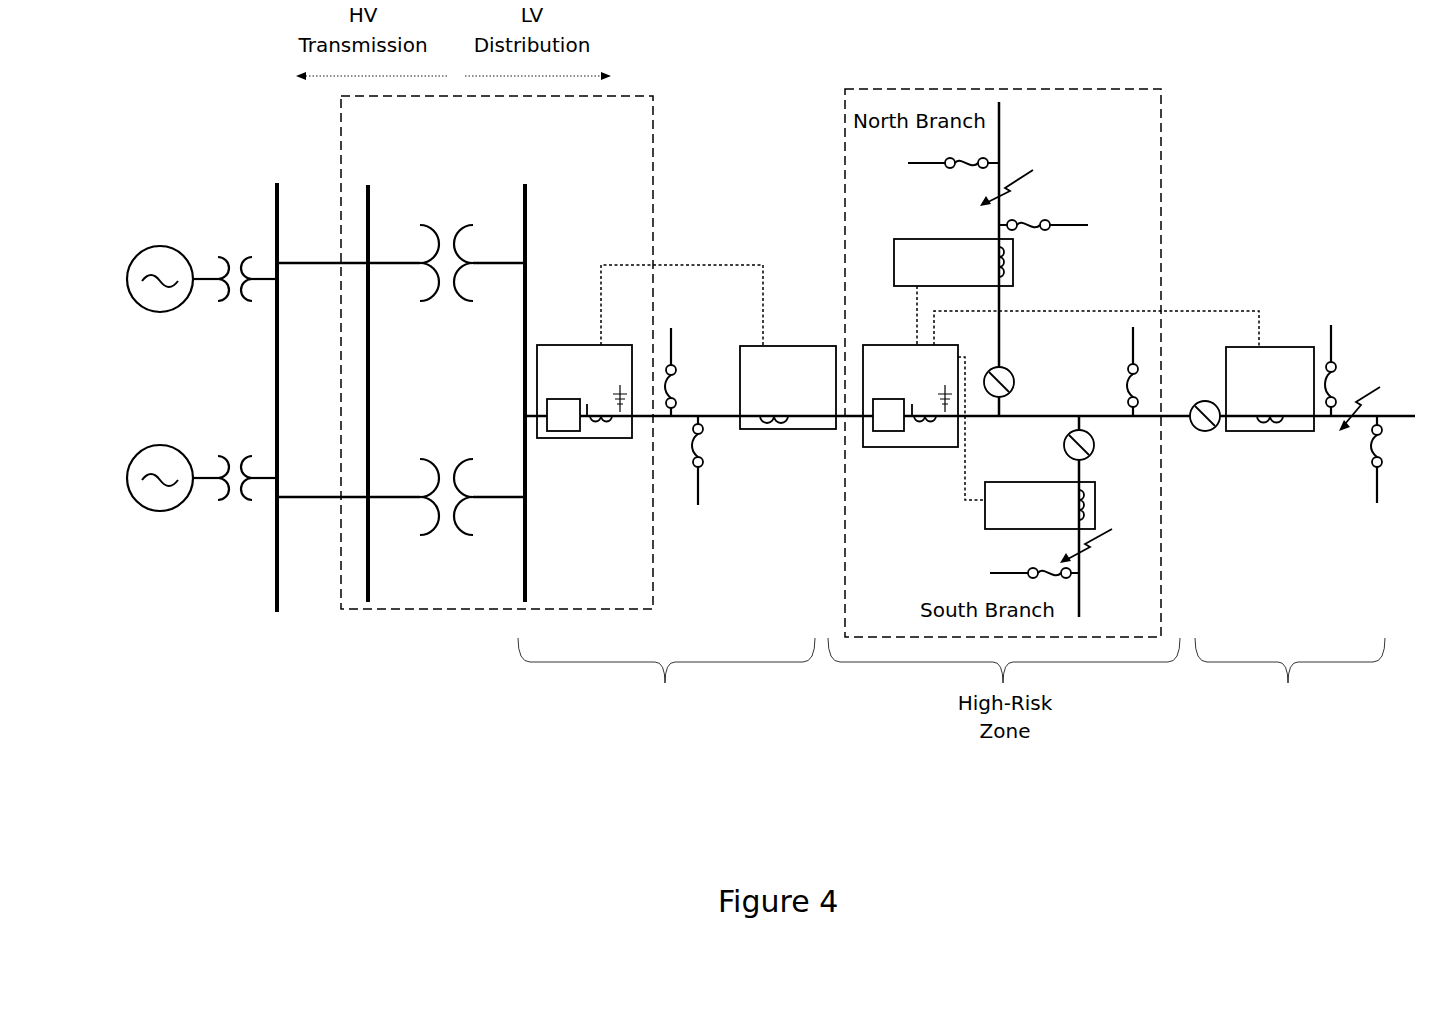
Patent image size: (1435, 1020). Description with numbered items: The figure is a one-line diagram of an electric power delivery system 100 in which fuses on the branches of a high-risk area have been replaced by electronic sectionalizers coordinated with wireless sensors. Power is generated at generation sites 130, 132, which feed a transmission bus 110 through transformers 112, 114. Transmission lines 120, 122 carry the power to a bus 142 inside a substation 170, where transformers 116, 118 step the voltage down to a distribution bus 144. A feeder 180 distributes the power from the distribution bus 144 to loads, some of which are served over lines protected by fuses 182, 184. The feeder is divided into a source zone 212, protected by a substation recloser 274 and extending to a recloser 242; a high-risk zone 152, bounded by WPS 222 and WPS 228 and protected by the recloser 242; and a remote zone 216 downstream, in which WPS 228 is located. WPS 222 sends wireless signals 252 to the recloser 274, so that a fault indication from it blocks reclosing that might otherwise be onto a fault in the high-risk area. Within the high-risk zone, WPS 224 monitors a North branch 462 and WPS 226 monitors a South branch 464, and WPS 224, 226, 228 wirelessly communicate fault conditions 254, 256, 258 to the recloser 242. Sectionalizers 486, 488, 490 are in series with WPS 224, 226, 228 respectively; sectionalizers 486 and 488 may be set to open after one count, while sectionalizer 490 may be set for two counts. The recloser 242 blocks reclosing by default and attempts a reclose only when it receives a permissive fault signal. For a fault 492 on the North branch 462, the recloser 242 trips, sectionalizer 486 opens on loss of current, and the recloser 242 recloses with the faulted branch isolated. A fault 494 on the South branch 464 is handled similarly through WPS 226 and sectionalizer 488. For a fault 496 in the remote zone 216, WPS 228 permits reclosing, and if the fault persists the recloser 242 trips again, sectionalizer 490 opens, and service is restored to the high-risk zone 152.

The electric power delivery system 100 is at (271, 39).
The transmission bus 110 is at (274, 202).
The transformer 112 is at (247, 258).
The transformer 114 is at (247, 457).
The transformer 116 is at (422, 303).
The transformer 118 is at (422, 537).
The transmission line 120 is at (328, 264).
The transmission line 122 is at (328, 498).
The generation site 130 is at (158, 247).
The generation site 132 is at (158, 446).
The bus 142 is at (370, 320).
The distribution bus 144 is at (523, 192).
The high-risk zone 152 is at (1075, 88).
The substation 170 is at (634, 95).
The feeder 180 is at (645, 420).
The fuse 182 is at (680, 388).
The fuse 184 is at (704, 440).
The source zone 212 is at (648, 744).
The remote zone 216 is at (1271, 742).
The WPS 222 is at (782, 346).
The WPS North 224 is at (917, 238).
The WPS South 226 is at (983, 520).
The WPS East 228 is at (1293, 433).
The recloser 242 is at (890, 346).
The signals 252 is at (705, 265).
The signal 254 is at (912, 302).
The signal 256 is at (960, 478).
The signal 258 is at (1100, 311).
The substation recloser 274 is at (575, 345).
The North branch 462 is at (1002, 153).
The South branch 464 is at (1082, 600).
The sectionalizer 486 is at (1012, 369).
The sectionalizer 488 is at (1093, 450).
The sectionalizer 490 is at (1205, 432).
The fault 492 is at (1033, 175).
The fault 494 is at (1112, 532).
The fault 496 is at (1338, 431).